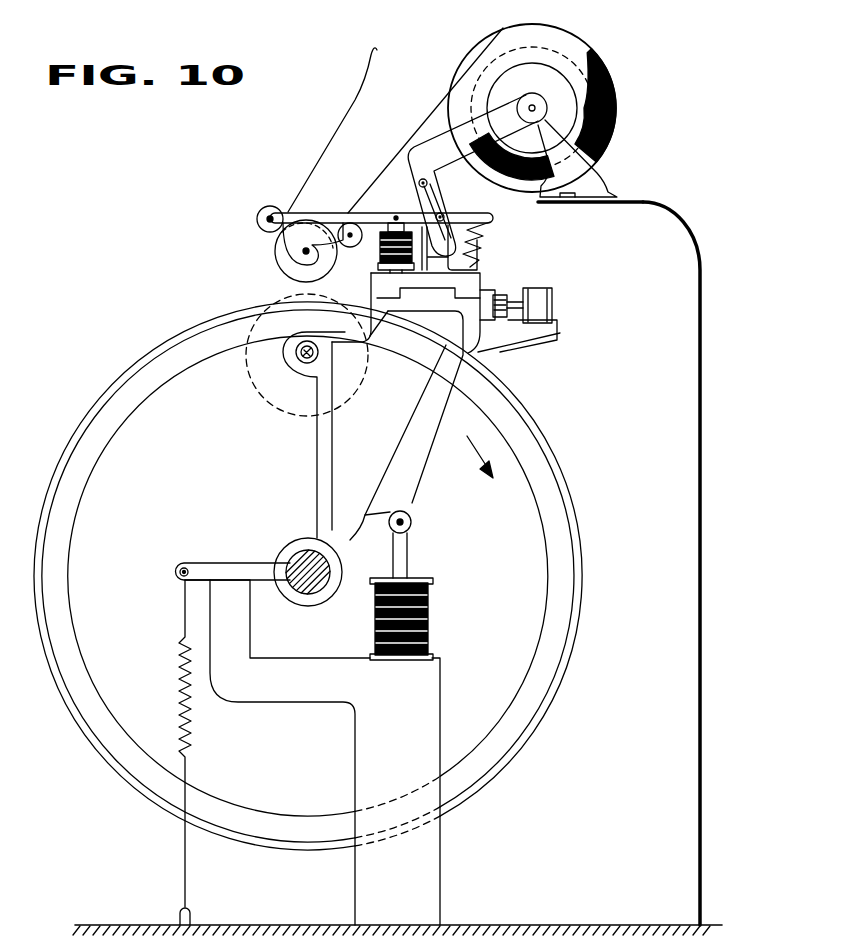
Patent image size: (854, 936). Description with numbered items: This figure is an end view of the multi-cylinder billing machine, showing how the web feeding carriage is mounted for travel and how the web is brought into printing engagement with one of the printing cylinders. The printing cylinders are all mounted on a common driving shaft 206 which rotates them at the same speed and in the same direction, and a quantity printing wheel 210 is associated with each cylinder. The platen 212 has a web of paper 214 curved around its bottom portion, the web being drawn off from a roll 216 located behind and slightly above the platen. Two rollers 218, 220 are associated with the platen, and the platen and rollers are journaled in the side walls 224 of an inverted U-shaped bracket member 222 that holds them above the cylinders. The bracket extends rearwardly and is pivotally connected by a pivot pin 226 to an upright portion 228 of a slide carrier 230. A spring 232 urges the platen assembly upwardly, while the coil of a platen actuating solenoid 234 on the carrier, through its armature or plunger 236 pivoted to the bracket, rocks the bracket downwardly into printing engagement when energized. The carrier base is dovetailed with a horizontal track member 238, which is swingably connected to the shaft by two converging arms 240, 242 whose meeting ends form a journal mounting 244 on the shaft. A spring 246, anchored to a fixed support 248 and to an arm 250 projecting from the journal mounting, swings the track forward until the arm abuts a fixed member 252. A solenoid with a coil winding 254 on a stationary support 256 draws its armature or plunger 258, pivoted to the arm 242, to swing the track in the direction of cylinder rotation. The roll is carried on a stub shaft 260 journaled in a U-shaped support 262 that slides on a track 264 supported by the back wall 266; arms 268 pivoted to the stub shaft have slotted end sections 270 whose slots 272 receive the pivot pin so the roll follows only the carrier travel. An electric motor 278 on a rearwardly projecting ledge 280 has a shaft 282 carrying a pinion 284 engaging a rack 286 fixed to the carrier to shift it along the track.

The common driving shaft 206 is at (319, 588).
The quantity printing wheel 210 is at (252, 402).
The platen 212 is at (278, 246).
The web of paper 214 is at (413, 131).
The roll 216 is at (604, 67).
The roller 218 is at (258, 210).
The roller 220 is at (350, 248).
The inverted U-shaped bracket member 222 is at (358, 175).
The side walls 224 is at (285, 262).
The pivot pin 226 is at (445, 214).
The upright portion 228 is at (468, 260).
The slide carrier 230 is at (470, 282).
The spring 232 is at (483, 240).
The coil of platen actuating solenoid 234 is at (388, 272).
The armature or plunger 236 is at (377, 224).
The track member 238 is at (430, 336).
The arm 240 is at (316, 466).
The arm 242 is at (412, 460).
The journal mounting 244 is at (284, 549).
The spring 246 is at (190, 756).
The fixed support 248 is at (198, 917).
The arm 250 is at (212, 562).
The fixed member 252 is at (240, 630).
The coil winding 254 is at (433, 619).
The stationary support 256 is at (423, 701).
The armature or plunger 258 is at (408, 552).
The stub shaft 260 is at (550, 107).
The U-shaped support 262 is at (578, 156).
The track 264 is at (596, 204).
The back wall 266 is at (698, 424).
The arm 268 is at (472, 125).
The end section 270 is at (430, 185).
The slot 272 is at (419, 184).
The electric motor 278 is at (555, 311).
The rearwardly projecting ledge 280 is at (555, 338).
The shaft 282 is at (553, 292).
The pinion 284 is at (500, 345).
The rack 286 is at (507, 293).